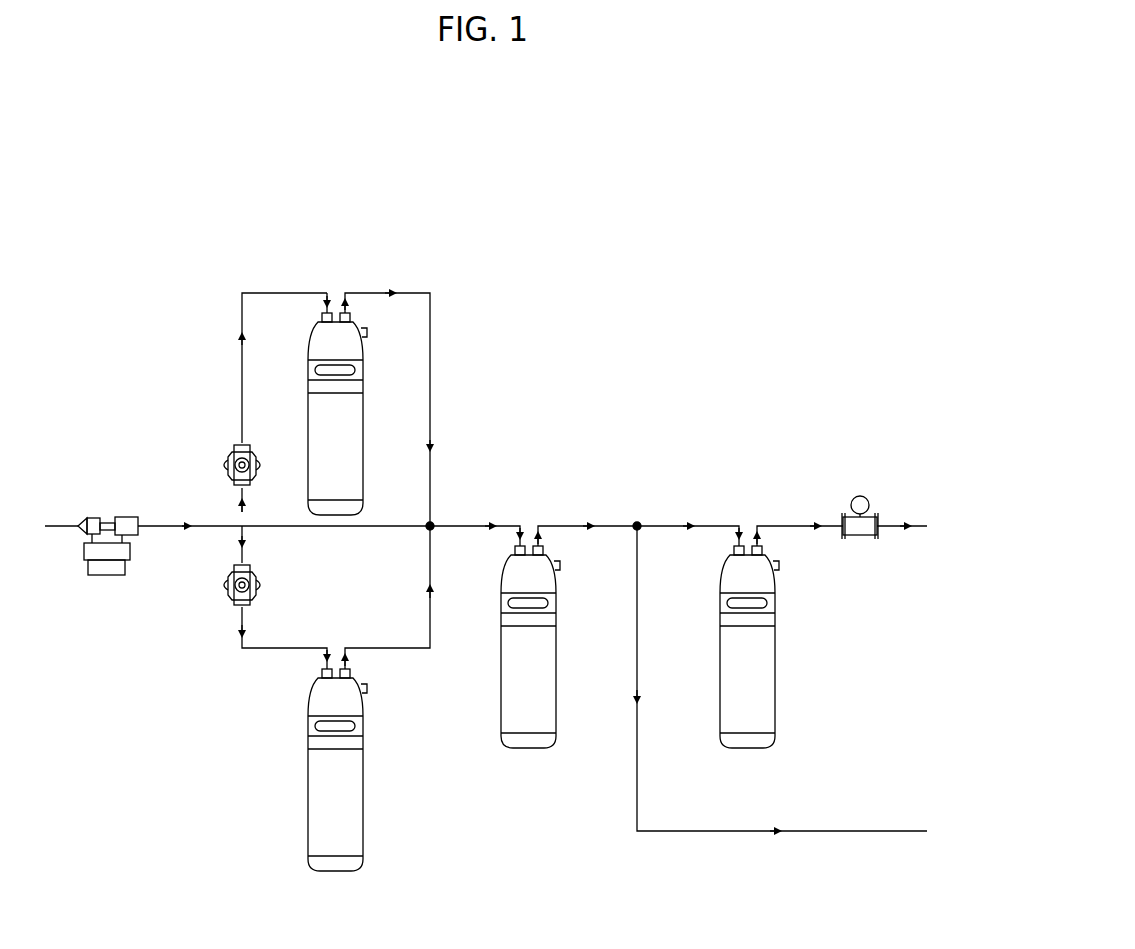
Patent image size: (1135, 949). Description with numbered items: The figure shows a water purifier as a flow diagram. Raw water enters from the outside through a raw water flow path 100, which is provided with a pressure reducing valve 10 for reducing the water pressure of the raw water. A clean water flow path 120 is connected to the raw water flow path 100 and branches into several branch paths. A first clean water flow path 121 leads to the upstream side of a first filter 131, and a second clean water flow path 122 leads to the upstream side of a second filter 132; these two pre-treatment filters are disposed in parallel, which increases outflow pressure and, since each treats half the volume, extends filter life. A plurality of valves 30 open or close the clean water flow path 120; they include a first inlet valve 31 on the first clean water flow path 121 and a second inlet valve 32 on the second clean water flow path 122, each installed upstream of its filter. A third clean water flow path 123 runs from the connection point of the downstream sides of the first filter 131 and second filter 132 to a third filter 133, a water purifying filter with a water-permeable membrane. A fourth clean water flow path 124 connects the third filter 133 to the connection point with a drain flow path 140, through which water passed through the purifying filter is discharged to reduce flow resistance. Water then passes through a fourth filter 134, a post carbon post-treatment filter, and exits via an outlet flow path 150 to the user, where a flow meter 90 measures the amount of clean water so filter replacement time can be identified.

The raw water flow path 100 is at (62, 525).
The pressure reducing valve 10 is at (108, 576).
The valves 30 is at (242, 525).
The first inlet valve 31 is at (222, 466).
The second inlet valve 32 is at (222, 586).
The clean water flow path 120 is at (655, 348).
The first clean water flow path 121 is at (242, 370).
The second clean water flow path 122 is at (284, 647).
The third clean water flow path 123 is at (477, 524).
The fourth clean water flow path 124 is at (573, 524).
The first filter 131 is at (338, 516).
The second filter 132 is at (334, 870).
The third filter 133 is at (527, 748).
The fourth filter 134 is at (747, 748).
The drain flow path 140 is at (727, 833).
The outlet flow path 150 is at (800, 524).
The flow meter 90 is at (857, 496).